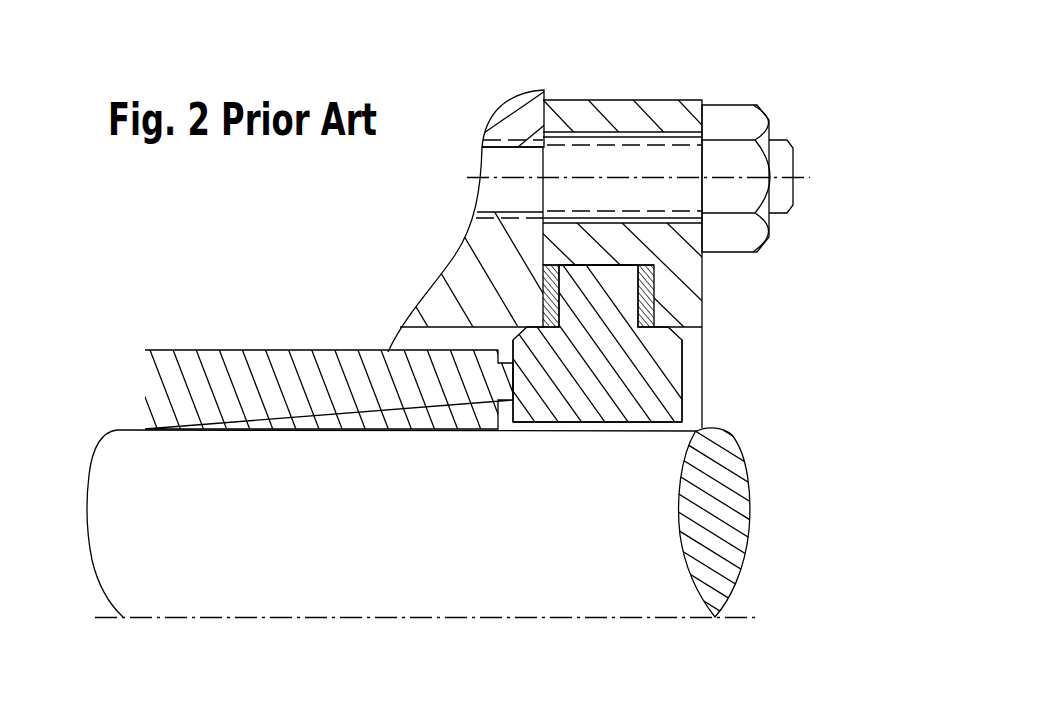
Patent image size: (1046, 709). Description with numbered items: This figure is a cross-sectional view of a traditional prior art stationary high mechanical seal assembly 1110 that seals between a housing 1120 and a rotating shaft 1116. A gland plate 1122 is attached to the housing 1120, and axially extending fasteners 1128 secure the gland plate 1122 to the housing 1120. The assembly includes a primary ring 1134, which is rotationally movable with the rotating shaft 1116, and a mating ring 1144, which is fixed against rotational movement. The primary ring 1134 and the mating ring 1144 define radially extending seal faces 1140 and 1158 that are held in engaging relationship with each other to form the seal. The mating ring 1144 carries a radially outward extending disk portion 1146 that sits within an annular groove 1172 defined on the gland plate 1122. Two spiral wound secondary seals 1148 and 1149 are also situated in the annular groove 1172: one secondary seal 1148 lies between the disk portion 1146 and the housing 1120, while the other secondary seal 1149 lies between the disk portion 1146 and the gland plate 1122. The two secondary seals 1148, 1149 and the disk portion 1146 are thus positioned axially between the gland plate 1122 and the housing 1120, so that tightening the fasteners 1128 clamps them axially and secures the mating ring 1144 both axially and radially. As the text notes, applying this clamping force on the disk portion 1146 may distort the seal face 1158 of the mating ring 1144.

The mechanical seal assembly 1110 is at (730, 88).
The rotating shaft 1116 is at (207, 598).
The housing 1120 is at (510, 117).
The gland plate 1122 is at (660, 110).
The fasteners 1128 is at (776, 215).
The primary ring 1134 is at (263, 362).
The seal face 1140 is at (515, 393).
The mating ring 1144 is at (618, 412).
The disk portion 1146 is at (623, 303).
The spiral wound secondary seal 1148 is at (543, 283).
The spiral wound secondary seal 1149 is at (653, 280).
The seal face 1158 is at (513, 378).
The annular groove 1172 is at (603, 273).